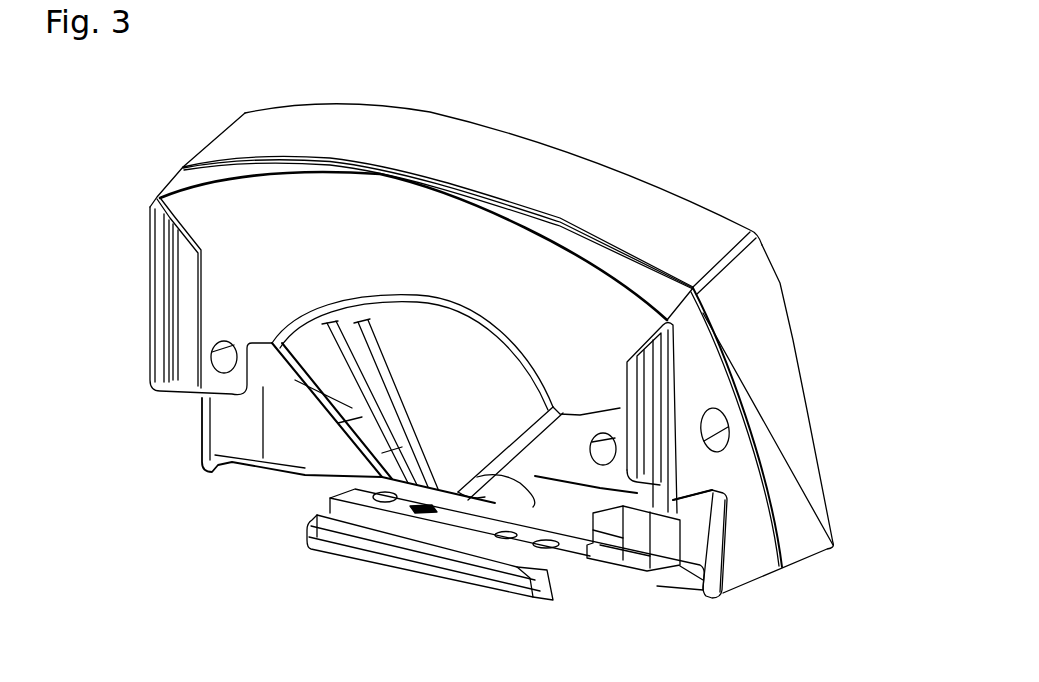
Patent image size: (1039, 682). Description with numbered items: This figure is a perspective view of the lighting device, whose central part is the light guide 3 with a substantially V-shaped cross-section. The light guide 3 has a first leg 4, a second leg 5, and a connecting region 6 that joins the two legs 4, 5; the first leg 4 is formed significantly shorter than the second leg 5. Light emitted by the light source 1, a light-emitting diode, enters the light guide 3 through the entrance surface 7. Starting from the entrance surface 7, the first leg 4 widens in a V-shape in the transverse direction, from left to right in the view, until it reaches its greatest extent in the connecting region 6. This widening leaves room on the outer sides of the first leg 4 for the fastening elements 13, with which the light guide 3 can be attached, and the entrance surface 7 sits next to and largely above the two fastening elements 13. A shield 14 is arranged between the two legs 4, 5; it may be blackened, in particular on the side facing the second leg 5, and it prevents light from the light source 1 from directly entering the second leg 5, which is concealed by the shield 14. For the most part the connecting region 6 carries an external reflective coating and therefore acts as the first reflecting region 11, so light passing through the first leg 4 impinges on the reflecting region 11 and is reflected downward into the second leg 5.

The light source 1 is at (425, 510).
The light guide 3 is at (857, 400).
The first leg 4 is at (185, 304).
The second leg 5 is at (803, 345).
The connecting region 6 is at (560, 142).
The entrance surface 7 is at (417, 295).
The first reflecting region 11 is at (426, 140).
The fastening elements 13 is at (237, 378).
The shield 14 is at (452, 417).